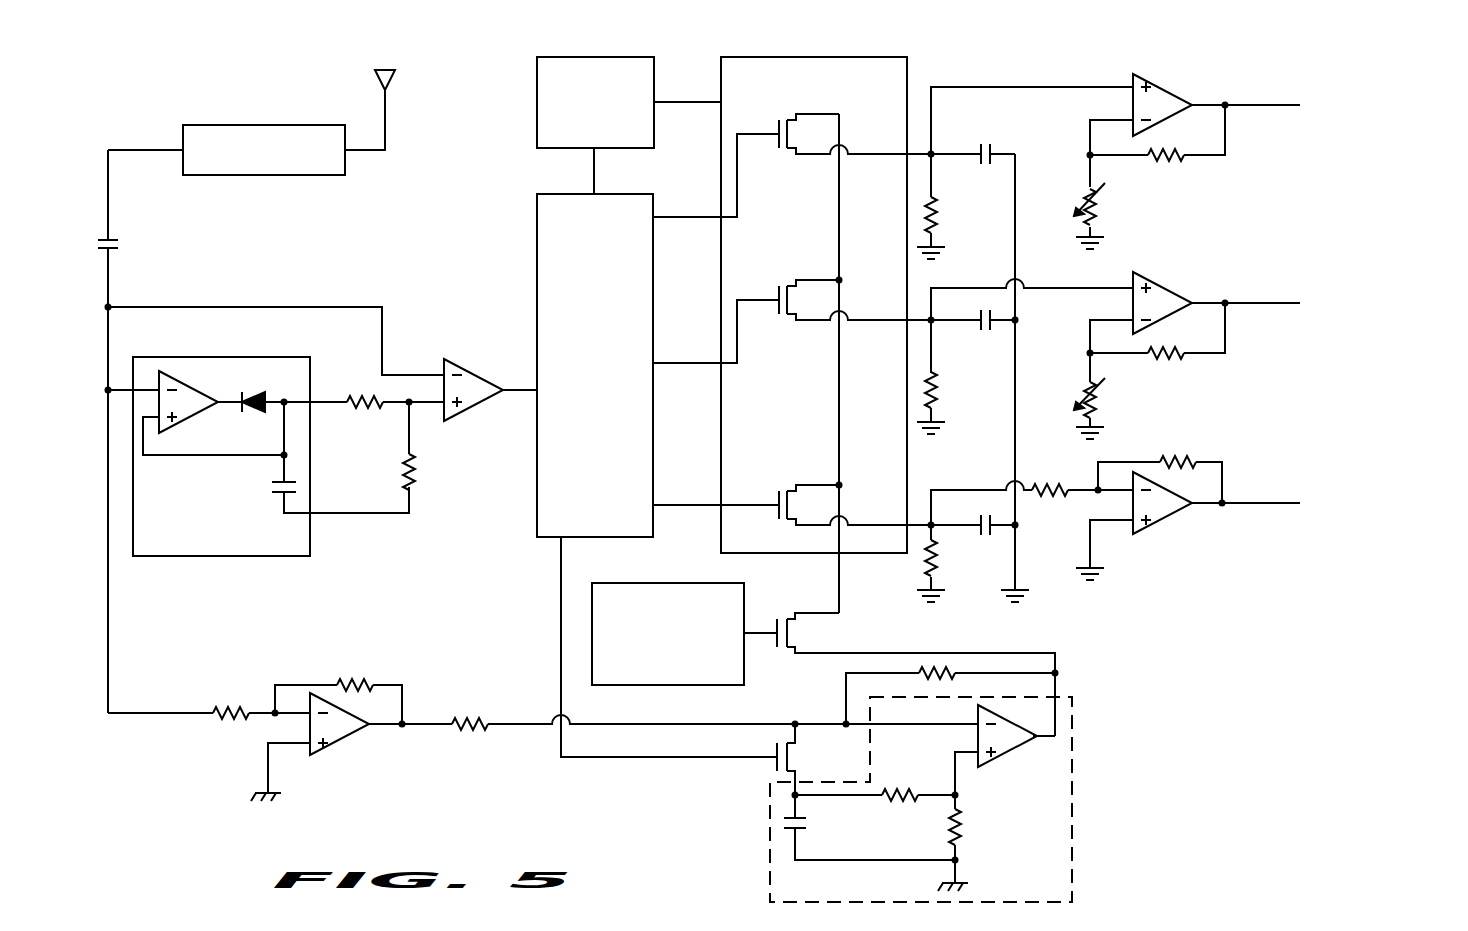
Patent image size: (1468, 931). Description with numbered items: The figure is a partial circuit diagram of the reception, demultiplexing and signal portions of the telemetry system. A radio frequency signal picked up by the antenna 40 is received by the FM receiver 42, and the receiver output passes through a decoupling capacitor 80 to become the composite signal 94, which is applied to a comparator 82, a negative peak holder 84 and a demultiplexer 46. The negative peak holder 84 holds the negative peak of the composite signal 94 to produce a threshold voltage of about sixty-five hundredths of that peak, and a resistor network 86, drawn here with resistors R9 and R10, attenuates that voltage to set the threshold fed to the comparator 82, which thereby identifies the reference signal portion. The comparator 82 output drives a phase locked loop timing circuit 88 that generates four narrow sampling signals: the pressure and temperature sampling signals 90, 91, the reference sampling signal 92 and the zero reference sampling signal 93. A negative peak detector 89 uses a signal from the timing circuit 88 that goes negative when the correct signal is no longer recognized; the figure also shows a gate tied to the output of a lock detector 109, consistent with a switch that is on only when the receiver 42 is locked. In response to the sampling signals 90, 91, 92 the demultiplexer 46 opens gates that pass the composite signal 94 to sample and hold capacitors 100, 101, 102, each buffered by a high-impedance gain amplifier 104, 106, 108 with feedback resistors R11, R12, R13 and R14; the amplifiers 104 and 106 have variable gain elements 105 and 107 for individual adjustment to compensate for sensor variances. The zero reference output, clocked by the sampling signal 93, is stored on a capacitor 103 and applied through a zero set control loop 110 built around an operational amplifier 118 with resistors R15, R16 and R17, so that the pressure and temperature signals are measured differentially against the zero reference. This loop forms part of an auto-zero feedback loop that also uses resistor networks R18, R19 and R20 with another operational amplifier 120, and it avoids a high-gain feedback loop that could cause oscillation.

The antenna 40 is at (395, 76).
The FM receiver 42 is at (273, 125).
The demultiplexer 46 is at (907, 82).
The decoupling capacitor 80 is at (118, 244).
The comparator 82 is at (478, 414).
The negative peak holder 84 is at (233, 556).
The resistor network 86 is at (406, 464).
The phase locked loop timing circuit 88 is at (533, 521).
The negative peak detector 89 is at (537, 135).
The pressure sampling signal 90 is at (676, 221).
The temperature sampling signal 91 is at (676, 367).
The reference sampling signal 92 is at (676, 509).
The zero reference sampling signal 93 is at (612, 760).
The composite signal 94 is at (260, 307).
The sample and hold capacitor 100 is at (985, 146).
The sample and hold capacitor 101 is at (981, 331).
The sample and hold capacitor 102 is at (981, 514).
The capacitor 103 is at (784, 822).
The gain amplifier 104 is at (1176, 92).
The variable gain element 105 is at (1098, 214).
The gain amplifier 106 is at (1176, 290).
The variable gain element 107 is at (1098, 396).
The gain amplifier 108 is at (1158, 522).
The lock detector output 109 is at (823, 659).
The zero set control loop 110 is at (1114, 761).
The operational amplifier 118 is at (999, 757).
The operational amplifier 120 is at (334, 745).
The resistor R9 is at (427, 446).
The resistor R10 is at (383, 383).
The resistor R11 is at (1172, 174).
The resistor R12 is at (1178, 372).
The resistor R13 is at (1032, 507).
The resistor R14 is at (1183, 444).
The resistor R15 is at (877, 817).
The resistor R16 is at (978, 843).
The resistor R17 is at (952, 671).
The resistor R18 is at (715, 705).
The resistor R19 is at (338, 682).
The resistor R20 is at (209, 732).